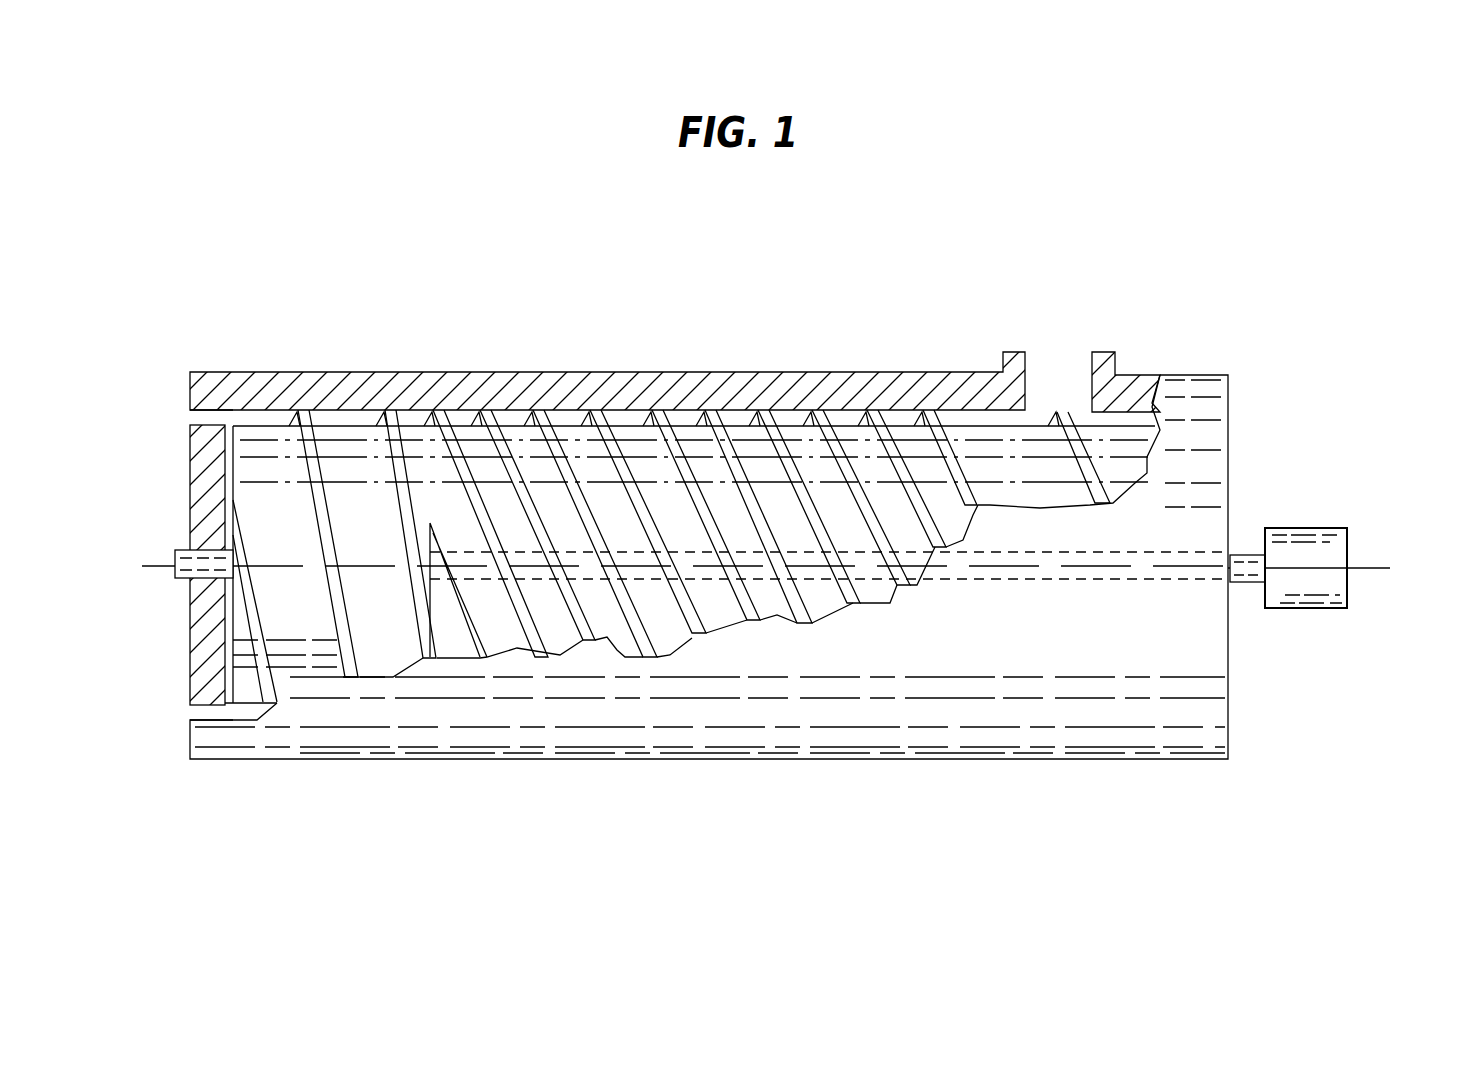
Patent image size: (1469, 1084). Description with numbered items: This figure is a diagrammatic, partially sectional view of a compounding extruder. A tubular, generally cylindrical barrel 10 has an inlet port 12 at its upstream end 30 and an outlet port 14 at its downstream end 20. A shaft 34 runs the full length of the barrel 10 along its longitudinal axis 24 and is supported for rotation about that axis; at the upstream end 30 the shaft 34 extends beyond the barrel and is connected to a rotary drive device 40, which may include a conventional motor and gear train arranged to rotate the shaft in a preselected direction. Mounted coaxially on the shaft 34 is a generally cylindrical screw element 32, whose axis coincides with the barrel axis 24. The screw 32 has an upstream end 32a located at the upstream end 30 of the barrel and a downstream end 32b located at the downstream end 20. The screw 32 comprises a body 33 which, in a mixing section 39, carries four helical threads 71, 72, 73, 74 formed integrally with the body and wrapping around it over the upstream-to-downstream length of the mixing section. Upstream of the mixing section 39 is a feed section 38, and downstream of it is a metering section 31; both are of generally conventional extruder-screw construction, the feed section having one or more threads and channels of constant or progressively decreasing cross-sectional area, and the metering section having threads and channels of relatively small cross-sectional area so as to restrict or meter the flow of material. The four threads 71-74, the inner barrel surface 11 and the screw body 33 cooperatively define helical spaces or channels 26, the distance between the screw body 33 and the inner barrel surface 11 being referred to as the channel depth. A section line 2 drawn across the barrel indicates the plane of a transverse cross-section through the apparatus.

The section line 2- 2 is at (806, 353).
The barrel 10 is at (340, 382).
The inner barrel surface 11 is at (462, 410).
The inlet port 12 is at (1065, 352).
The outlet port 14 is at (180, 418).
The downstream end 20 is at (102, 503).
The longitudinal axis 24 is at (152, 567).
The channels 26 is at (617, 410).
The upstream end 30 is at (1255, 490).
The metering section 31 is at (385, 625).
The screw element 32 is at (536, 460).
The upstream end of screw element 32a is at (923, 435).
The downstream end of screw element 32b is at (436, 437).
The screw body 33 is at (910, 435).
The shaft 34 is at (180, 548).
The feed section 38 is at (1136, 296).
The mixing section 39 is at (607, 614).
The rotary drive device 40 is at (1323, 610).
The helical thread 71 is at (883, 430).
The helical thread 72 is at (818, 412).
The helical thread 73 is at (762, 412).
The helical thread 74 is at (727, 497).